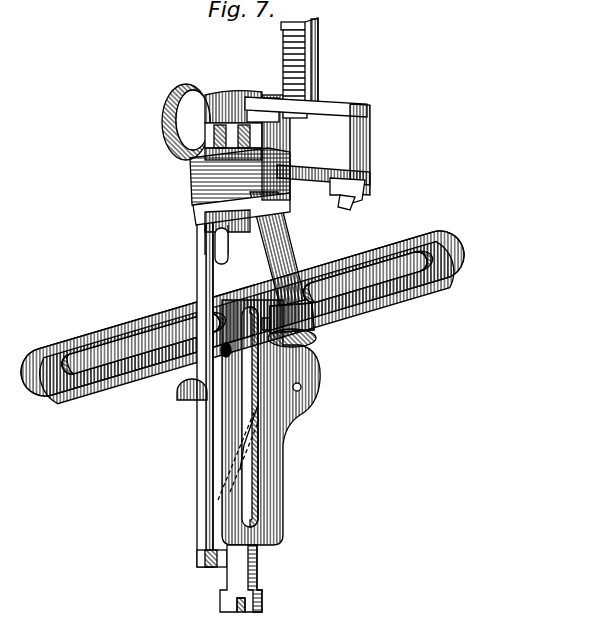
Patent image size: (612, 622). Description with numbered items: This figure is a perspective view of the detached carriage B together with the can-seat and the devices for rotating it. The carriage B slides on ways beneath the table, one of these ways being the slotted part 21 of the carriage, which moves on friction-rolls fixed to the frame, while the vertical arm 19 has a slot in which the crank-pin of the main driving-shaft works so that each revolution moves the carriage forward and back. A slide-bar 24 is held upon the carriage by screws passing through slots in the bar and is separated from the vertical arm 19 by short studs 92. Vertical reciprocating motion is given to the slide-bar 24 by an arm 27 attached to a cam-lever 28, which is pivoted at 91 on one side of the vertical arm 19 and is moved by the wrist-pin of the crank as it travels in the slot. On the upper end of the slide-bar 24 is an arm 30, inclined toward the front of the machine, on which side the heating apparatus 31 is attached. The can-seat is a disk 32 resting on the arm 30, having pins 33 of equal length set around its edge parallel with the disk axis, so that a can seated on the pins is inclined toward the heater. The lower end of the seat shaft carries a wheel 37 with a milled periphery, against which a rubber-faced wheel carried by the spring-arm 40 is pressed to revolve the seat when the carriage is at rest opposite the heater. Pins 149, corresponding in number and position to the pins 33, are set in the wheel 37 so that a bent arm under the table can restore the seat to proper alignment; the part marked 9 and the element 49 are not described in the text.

The carriage B is at (244, 318).
The slotted part of the carriage 21 is at (242, 313).
The slide-bar 24 is at (188, 393).
The short studs 92 is at (236, 272).
The vertical arm 19 is at (284, 470).
The pivot 91 is at (302, 388).
The cam-lever 28 is at (247, 432).
The arm 27 is at (186, 403).
The pin 9 is at (224, 356).
The wheel 37 is at (315, 342).
The pins 149 is at (303, 314).
The disk 32 is at (190, 170).
The heating apparatus 31 is at (164, 113).
The knurled cylinder 49 is at (238, 95).
The spring-arm 40 is at (263, 110).
The pins 33 is at (248, 98).
The arm 30 is at (307, 155).